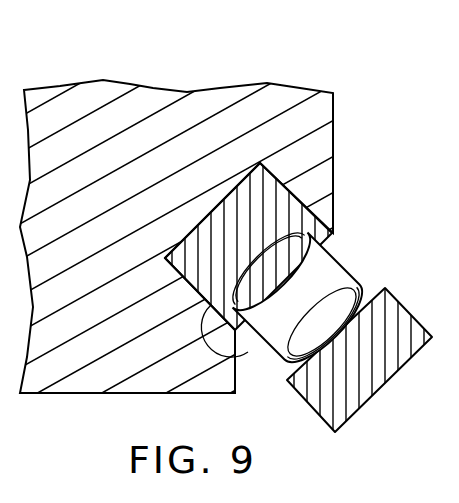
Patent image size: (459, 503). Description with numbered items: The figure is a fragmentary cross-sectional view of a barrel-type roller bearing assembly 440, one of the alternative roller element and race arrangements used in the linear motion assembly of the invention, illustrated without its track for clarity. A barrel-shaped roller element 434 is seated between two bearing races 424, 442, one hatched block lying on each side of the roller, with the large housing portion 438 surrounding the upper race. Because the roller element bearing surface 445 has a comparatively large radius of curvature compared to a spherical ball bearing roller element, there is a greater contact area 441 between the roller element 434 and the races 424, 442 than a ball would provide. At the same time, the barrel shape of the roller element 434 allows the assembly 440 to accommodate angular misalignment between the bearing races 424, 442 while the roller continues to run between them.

The housing block 438 is at (150, 88).
The bearing race 442 is at (306, 200).
The barrel-type roller bearing assembly 440 is at (352, 218).
The roller element 434 is at (345, 266).
The roller element bearing surface 445 is at (287, 365).
The contact area 441 is at (372, 380).
The bearing race 424 is at (356, 420).